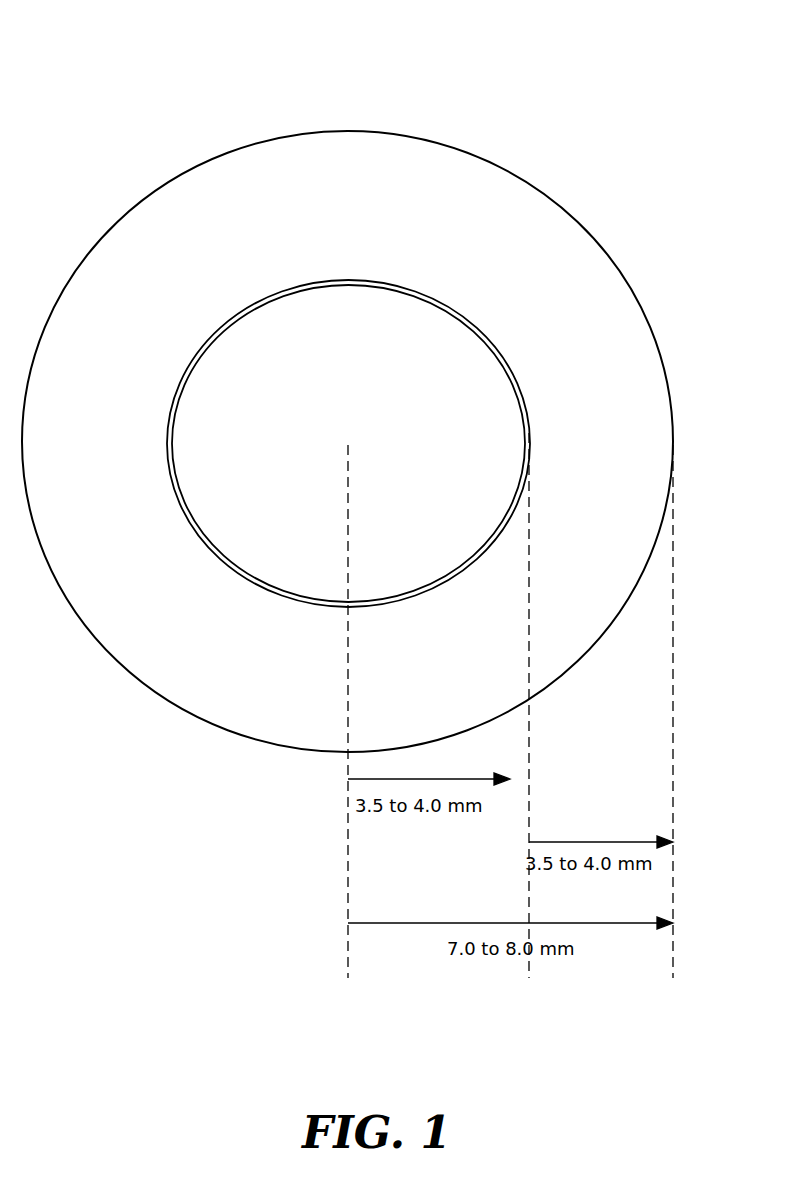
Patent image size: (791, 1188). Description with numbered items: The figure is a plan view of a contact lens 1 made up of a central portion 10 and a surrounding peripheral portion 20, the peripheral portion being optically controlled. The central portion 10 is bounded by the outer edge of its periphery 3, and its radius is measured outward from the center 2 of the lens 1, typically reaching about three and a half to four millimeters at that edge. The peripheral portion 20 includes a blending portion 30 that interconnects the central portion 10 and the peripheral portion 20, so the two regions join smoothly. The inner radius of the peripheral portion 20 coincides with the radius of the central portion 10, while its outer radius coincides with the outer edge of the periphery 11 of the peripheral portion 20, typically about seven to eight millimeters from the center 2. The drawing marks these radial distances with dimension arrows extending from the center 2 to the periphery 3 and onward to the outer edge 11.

The contact lens 1 is at (583, 80).
The outer edge of the periphery of the peripheral portion 11 is at (510, 188).
The peripheral portion 20 is at (205, 271).
The blending portion 30 is at (295, 292).
The outer edge of the periphery of the central portion 3 is at (377, 310).
The central portion 10 is at (298, 418).
The center 2 is at (349, 442).